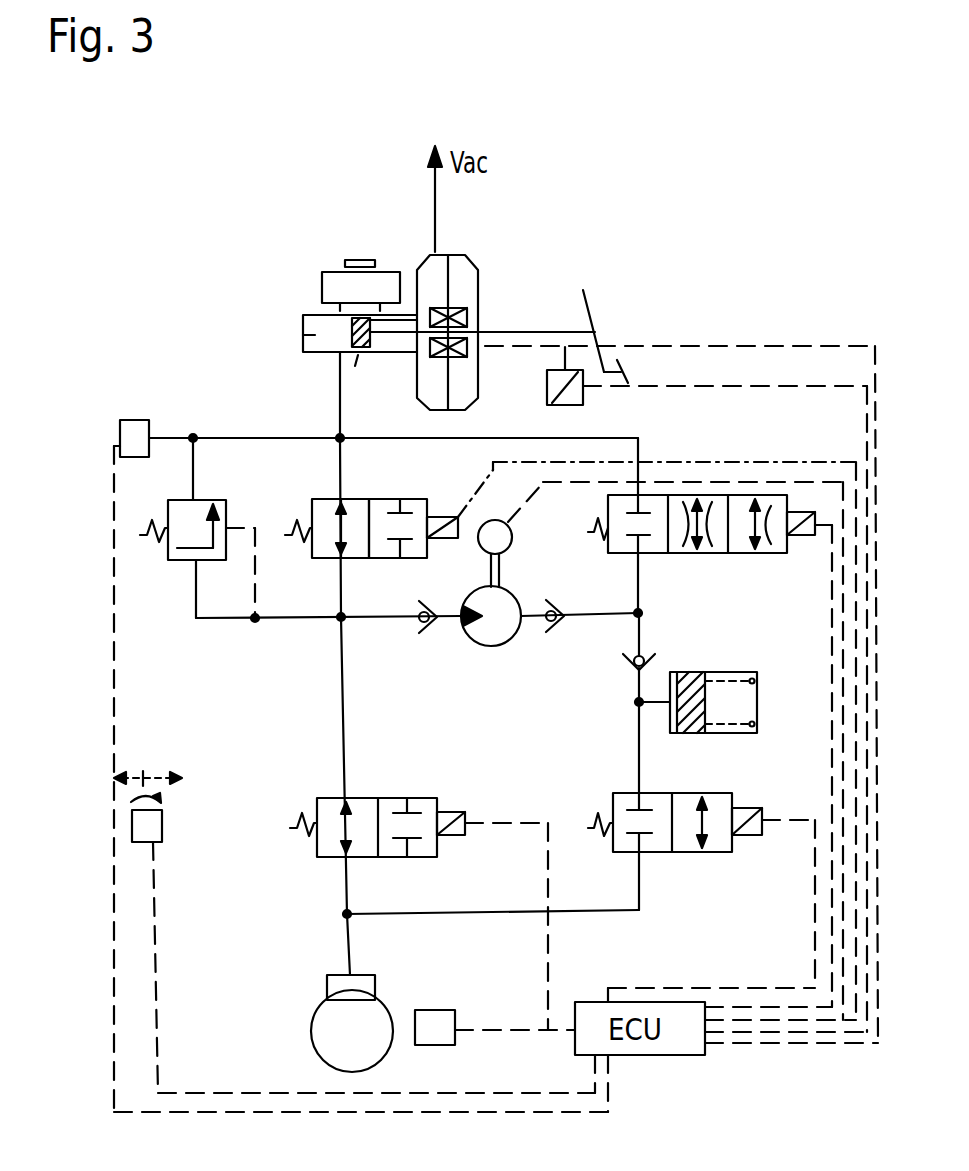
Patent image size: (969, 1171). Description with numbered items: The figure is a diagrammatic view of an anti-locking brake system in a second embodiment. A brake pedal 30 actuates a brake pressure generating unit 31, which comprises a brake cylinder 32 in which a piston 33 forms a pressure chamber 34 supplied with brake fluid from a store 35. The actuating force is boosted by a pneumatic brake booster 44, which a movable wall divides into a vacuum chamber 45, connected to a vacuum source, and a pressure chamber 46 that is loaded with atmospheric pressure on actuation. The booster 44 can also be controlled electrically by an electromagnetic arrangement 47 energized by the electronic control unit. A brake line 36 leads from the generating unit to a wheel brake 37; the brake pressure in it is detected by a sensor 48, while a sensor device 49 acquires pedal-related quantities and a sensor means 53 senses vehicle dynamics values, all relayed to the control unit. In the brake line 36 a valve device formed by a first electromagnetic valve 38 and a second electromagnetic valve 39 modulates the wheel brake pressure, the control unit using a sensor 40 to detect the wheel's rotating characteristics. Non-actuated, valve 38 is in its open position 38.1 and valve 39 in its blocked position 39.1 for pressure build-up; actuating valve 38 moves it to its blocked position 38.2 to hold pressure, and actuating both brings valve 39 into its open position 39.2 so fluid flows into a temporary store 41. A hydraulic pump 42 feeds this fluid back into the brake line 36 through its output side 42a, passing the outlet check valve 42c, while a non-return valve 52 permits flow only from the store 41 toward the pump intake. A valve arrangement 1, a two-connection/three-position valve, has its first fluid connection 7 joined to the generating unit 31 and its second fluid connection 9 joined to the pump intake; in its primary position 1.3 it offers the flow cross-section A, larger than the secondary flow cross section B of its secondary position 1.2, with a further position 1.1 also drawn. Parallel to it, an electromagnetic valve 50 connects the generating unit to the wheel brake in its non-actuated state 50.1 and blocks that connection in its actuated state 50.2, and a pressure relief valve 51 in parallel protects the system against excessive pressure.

The valve arrangement 1 is at (712, 460).
The position of valve arrangement 1.1 is at (652, 553).
The secondary position 1.2 is at (715, 553).
The primary position 1.3 is at (768, 553).
The flow cross-section A is at (762, 528).
The secondary flow cross section B is at (720, 522).
The first fluid connection 7 is at (638, 462).
The second fluid connection 9 is at (638, 580).
The brake pedal 30 is at (590, 290).
The brake pressure generating unit 31 is at (283, 236).
The brake cylinder 32 is at (303, 315).
The piston 33 is at (358, 358).
The pressure chamber 34 is at (312, 337).
The store 35 is at (332, 272).
The brake line 36 is at (340, 400).
The wheel brake 37 is at (381, 1012).
The electromagnetic valve 38 is at (280, 895).
The open position 38.1 is at (358, 798).
The blocked position 38.2 is at (424, 798).
The electromagnetic valve 39 is at (702, 890).
The blocked position 39.1 is at (660, 852).
The open position 39.2 is at (722, 852).
The sensor 40 is at (452, 1010).
The temporary store 41 is at (758, 701).
The hydraulic pump 42 is at (492, 640).
The output side of the pump 42a is at (398, 623).
The pump pressure check valve 42c is at (575, 622).
The pneumatic brake booster 44 is at (466, 255).
The vacuum chamber 45 is at (432, 398).
The pressure chamber 46 is at (466, 400).
The electromagnetic arrangement 47 is at (470, 300).
The sensor 48 is at (135, 457).
The sensor device 49 is at (583, 405).
The electromagnetic valve 50 is at (424, 482).
The non-actuated state 50.1 is at (352, 558).
The actuated state 50.2 is at (418, 558).
The pressure relief valve 51 is at (170, 560).
The non-return valve 52 is at (657, 655).
The sensor means 53 is at (165, 826).